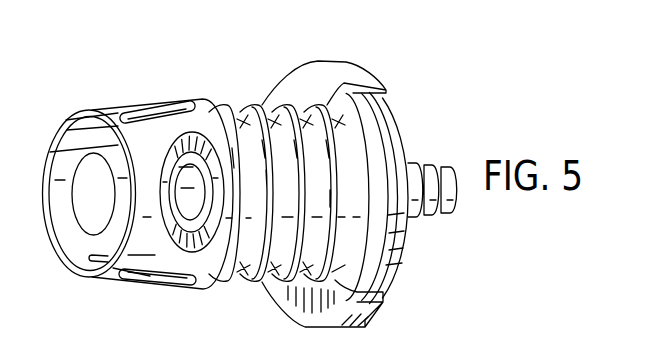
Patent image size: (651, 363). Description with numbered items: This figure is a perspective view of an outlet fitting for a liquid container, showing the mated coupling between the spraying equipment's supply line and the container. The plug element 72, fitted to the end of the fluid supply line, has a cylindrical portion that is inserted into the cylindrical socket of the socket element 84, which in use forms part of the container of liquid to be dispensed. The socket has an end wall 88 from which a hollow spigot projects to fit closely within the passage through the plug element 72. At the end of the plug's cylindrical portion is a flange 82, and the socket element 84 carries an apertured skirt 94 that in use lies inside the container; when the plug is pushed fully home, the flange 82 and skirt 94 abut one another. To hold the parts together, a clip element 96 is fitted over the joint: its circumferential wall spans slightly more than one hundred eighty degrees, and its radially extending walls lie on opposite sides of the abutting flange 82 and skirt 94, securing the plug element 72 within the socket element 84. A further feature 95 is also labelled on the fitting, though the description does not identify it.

The connector body 72 is at (422, 118).
The nipple 82 is at (381, 242).
The sleeve 84 is at (210, 90).
The bore 88 is at (197, 228).
The flange rim 94 is at (358, 263).
The front flange 95 is at (80, 120).
The locking tab 96 is at (292, 83).